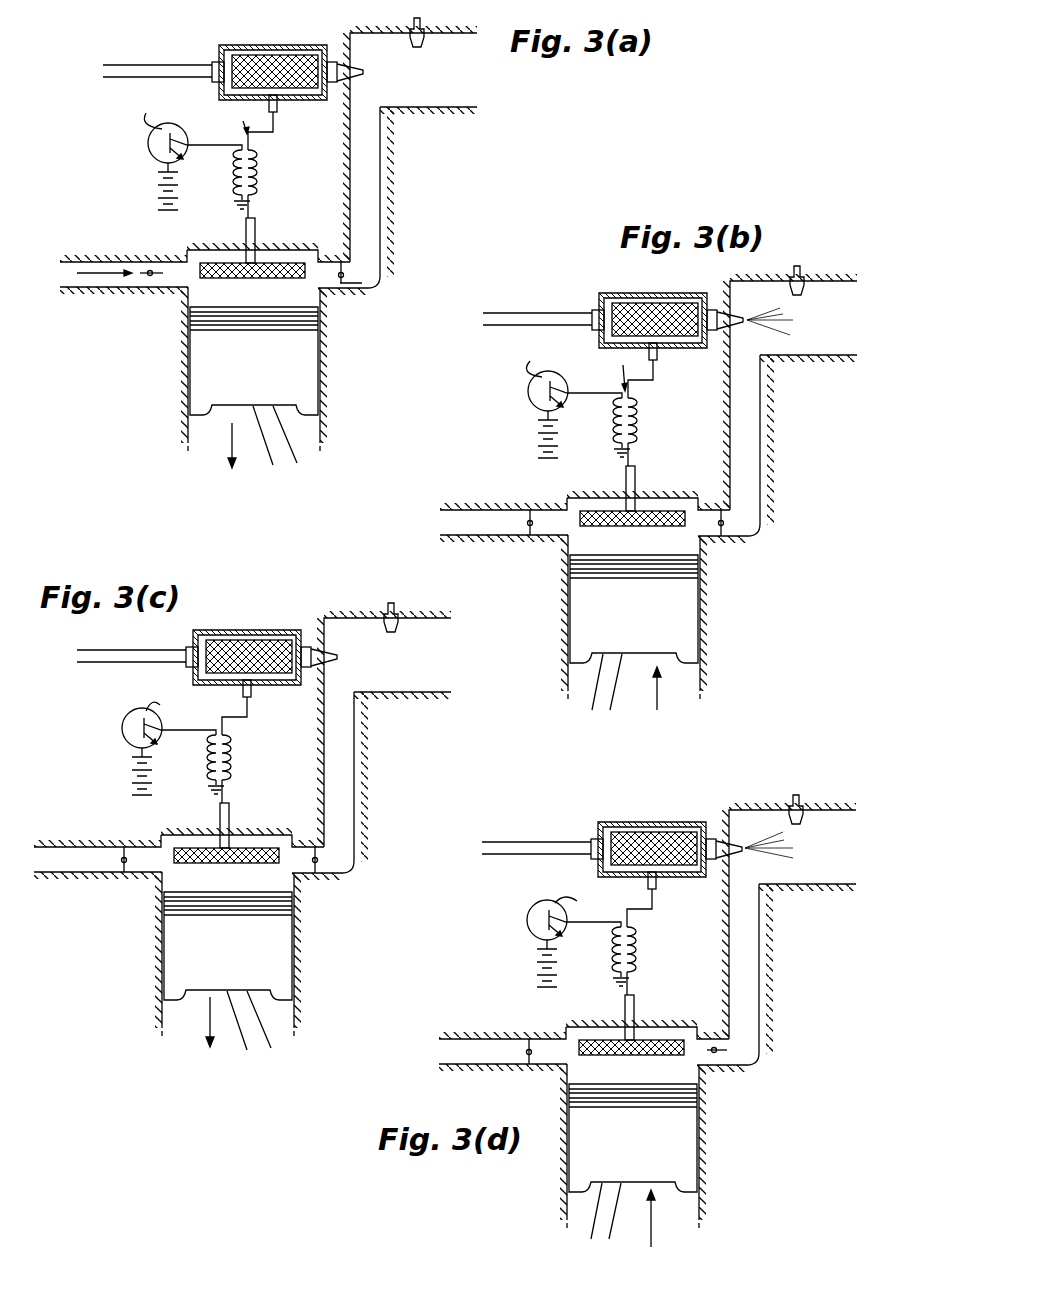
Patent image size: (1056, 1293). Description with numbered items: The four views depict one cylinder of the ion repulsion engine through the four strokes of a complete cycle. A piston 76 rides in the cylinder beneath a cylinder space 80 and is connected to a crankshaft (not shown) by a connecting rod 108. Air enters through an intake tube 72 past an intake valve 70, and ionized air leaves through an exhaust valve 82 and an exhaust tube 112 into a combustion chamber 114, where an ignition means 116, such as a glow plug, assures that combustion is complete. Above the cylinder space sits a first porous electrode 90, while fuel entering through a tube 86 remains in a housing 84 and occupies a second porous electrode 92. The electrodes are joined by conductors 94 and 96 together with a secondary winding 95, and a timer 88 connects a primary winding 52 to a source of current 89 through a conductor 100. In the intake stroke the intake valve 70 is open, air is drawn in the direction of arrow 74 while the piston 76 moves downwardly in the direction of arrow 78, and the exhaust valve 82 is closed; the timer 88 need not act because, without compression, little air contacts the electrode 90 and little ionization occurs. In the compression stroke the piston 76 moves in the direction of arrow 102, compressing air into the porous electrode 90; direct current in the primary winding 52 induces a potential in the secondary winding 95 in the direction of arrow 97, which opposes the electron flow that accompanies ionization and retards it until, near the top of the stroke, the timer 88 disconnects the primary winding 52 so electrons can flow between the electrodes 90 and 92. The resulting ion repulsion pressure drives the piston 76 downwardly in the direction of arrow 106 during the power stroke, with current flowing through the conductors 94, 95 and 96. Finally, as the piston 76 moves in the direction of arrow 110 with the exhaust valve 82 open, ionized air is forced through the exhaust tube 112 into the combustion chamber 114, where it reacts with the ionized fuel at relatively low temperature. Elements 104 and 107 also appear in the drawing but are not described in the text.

In FIG. 3A, the primary winding 52 is at (234, 183).
In FIG. 3B, the primary winding 52 is at (600, 433).
In FIG. 3C, the primary winding 52 is at (196, 773).
In FIG. 3D, the primary winding 52 is at (598, 961).
In FIG. 3A, the intake valve 70 is at (147, 262).
In FIG. 3B, the intake valve 70 is at (518, 505).
In FIG. 3C, the intake valve 70 is at (108, 884).
In FIG. 3D, the intake valve 70 is at (498, 1073).
In FIG. 3A, the intake tube 72 is at (122, 290).
In FIG. 3B, the intake tube 72 is at (504, 544).
In FIG. 3C, the intake tube 72 is at (98, 845).
In FIG. 3D, the intake tube 72 is at (503, 1037).
In FIG. 3A, the arrow 74 is at (91, 282).
In FIG. 3A, the piston 76 is at (304, 416).
In FIG. 3B, the piston 76 is at (654, 595).
In FIG. 3C, the piston 76 is at (247, 932).
In FIG. 3D, the piston 76 is at (651, 1124).
In FIG. 3A, the arrow 78 is at (228, 445).
In FIG. 3A, the cylinder space 80 is at (253, 306).
In FIG. 3B, the cylinder space 80 is at (634, 596).
In FIG. 3C, the cylinder space 80 is at (228, 933).
In FIG. 3D, the cylinder space 80 is at (633, 1122).
In FIG. 3A, the exhaust valve 82 is at (355, 291).
In FIG. 3B, the exhaust valve 82 is at (737, 546).
In FIG. 3C, the exhaust valve 82 is at (336, 880).
In FIG. 3D, the exhaust valve 82 is at (730, 1075).
In FIG. 3A, the fuel injector housing 84 is at (250, 46).
In FIG. 3B, the fuel injector housing 84 is at (654, 309).
In FIG. 3C, the fuel injector housing 84 is at (248, 646).
In FIG. 3D, the fuel injector housing 84 is at (653, 839).
In FIG. 3A, the tube 86 is at (167, 66).
In FIG. 3B, the tube 86 is at (537, 304).
In FIG. 3C, the tube 86 is at (131, 640).
In FIG. 3D, the tube 86 is at (536, 833).
In FIG. 3A, the timer 88 is at (149, 149).
In FIG. 3B, the timer 88 is at (555, 395).
In FIG. 3C, the timer 88 is at (152, 732).
In FIG. 3D, the timer 88 is at (554, 924).
In FIG. 3A, the source of current 89 is at (157, 190).
In FIG. 3B, the source of current 89 is at (522, 444).
In FIG. 3C, the source of current 89 is at (120, 777).
In FIG. 3D, the source of current 89 is at (527, 974).
In FIG. 3A, the first porous electrode 90 is at (205, 281).
In FIG. 3B, the first porous electrode 90 is at (632, 493).
In FIG. 3C, the first porous electrode 90 is at (226, 832).
In FIG. 3D, the first porous electrode 90 is at (605, 1074).
In FIG. 3A, the second porous electrode 92 is at (287, 58).
In FIG. 3B, the second porous electrode 92 is at (655, 298).
In FIG. 3C, the second porous electrode 92 is at (249, 638).
In FIG. 3D, the second porous electrode 92 is at (660, 829).
In FIG. 3A, the conductor 94 is at (257, 216).
In FIG. 3B, the conductor 94 is at (654, 477).
In FIG. 3C, the conductor 94 is at (248, 814).
In FIG. 3D, the conductor 94 is at (656, 1006).
In FIG. 3A, the secondary winding 95 is at (262, 183).
In FIG. 3B, the secondary winding 95 is at (656, 421).
In FIG. 3C, the secondary winding 95 is at (249, 757).
In FIG. 3D, the secondary winding 95 is at (652, 949).
In FIG. 3A, the conductor 96 is at (276, 123).
In FIG. 3B, the conductor 96 is at (664, 379).
In FIG. 3C, the conductor 96 is at (256, 716).
In FIG. 3D, the conductor 96 is at (659, 908).
In FIG. 3A, the arrow 97 is at (241, 127).
In FIG. 3B, the arrow 97 is at (607, 373).
In FIG. 3A, the conductor 100 is at (181, 161).
In FIG. 3B, the conductor 100 is at (577, 418).
In FIG. 3C, the conductor 100 is at (172, 755).
In FIG. 3D, the conductor 100 is at (577, 943).
In FIG. 3B, the arrow 102 is at (666, 704).
In FIG. 3A, the base lead 104 is at (146, 111).
In FIG. 3B, the base lead 104 is at (548, 358).
In FIG. 3C, the base lead 104 is at (172, 705).
In FIG. 3D, the base lead 104 is at (585, 901).
In FIG. 3C, the arrow 106 is at (183, 1028).
In FIG. 3A, the injector nozzle 107 is at (374, 63).
In FIG. 3B, the injector nozzle 107 is at (755, 312).
In FIG. 3C, the injector nozzle 107 is at (343, 647).
In FIG. 3D, the injector nozzle 107 is at (767, 857).
In FIG. 3A, the connecting rod 108 is at (286, 464).
In FIG. 3B, the connecting rod 108 is at (576, 691).
In FIG. 3C, the connecting rod 108 is at (249, 1034).
In FIG. 3D, the connecting rod 108 is at (582, 1226).
In FIG. 3D, the arrow 110 is at (701, 1218).
In FIG. 3A, the exhaust tube 112 is at (382, 214).
In FIG. 3B, the exhaust tube 112 is at (777, 408).
In FIG. 3C, the exhaust tube 112 is at (371, 745).
In FIG. 3D, the exhaust tube 112 is at (776, 937).
In FIG. 3A, the combustion chamber 114 is at (414, 110).
In FIG. 3B, the combustion chamber 114 is at (808, 376).
In FIG. 3C, the combustion chamber 114 is at (402, 710).
In FIG. 3D, the combustion chamber 114 is at (807, 906).
In FIG. 3A, the ignition means 116 is at (426, 30).
In FIG. 3B, the ignition means 116 is at (824, 274).
In FIG. 3C, the ignition means 116 is at (373, 605).
In FIG. 3D, the ignition means 116 is at (819, 797).